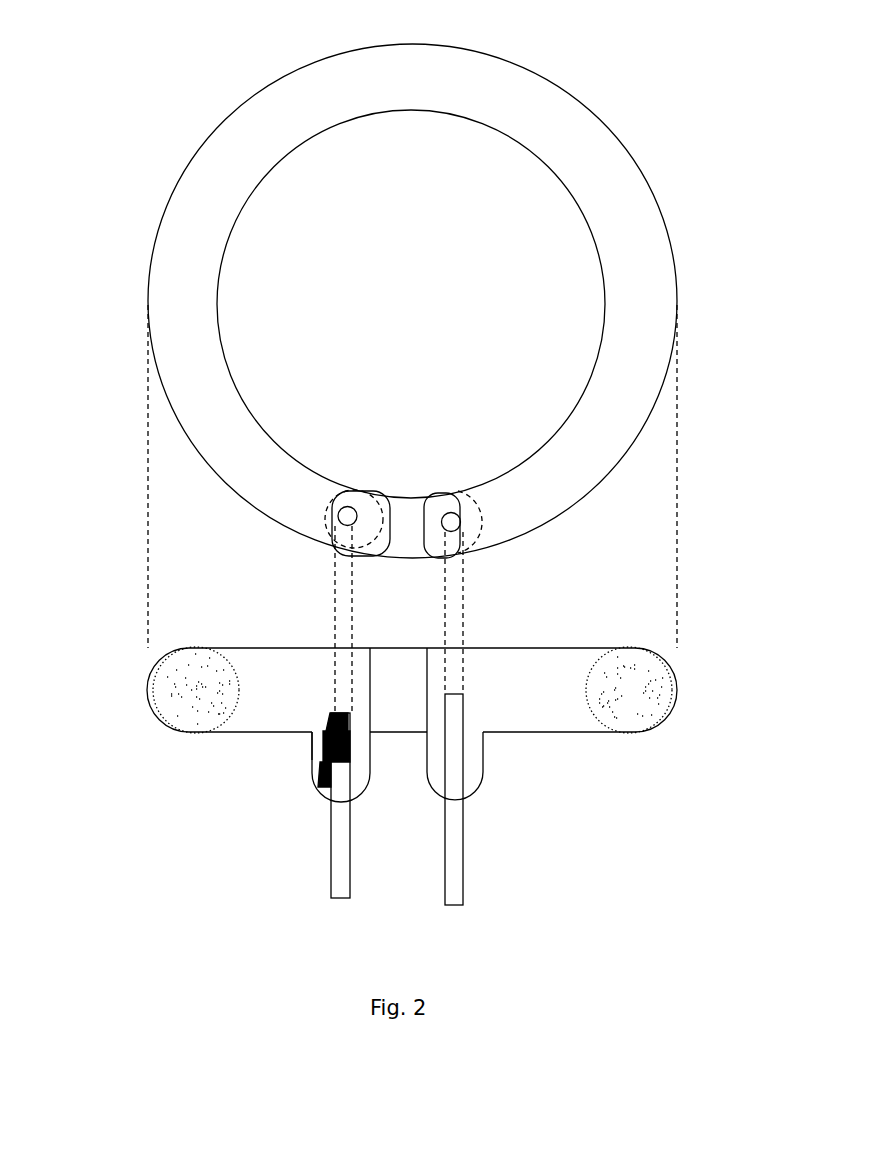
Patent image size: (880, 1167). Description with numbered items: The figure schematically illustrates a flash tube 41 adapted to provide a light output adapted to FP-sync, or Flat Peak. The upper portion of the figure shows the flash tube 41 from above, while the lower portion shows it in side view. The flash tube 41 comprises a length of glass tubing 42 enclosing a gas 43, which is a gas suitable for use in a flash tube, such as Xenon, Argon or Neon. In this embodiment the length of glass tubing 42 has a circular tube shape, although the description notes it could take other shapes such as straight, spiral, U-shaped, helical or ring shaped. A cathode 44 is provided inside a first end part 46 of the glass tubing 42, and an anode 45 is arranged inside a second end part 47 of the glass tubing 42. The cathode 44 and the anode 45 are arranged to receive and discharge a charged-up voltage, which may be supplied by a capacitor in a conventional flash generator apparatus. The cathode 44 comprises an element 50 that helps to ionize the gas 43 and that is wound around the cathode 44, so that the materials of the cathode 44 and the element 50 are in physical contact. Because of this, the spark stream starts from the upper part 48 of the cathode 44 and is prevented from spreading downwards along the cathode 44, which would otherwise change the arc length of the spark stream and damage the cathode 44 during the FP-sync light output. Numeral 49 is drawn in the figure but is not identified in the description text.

The flash tube 41 is at (172, 66).
The length of glass tubing 42 is at (650, 173).
The gas 43 is at (152, 692).
The cathode 44 is at (353, 498).
The anode 45 is at (450, 497).
The first end part 46 is at (379, 811).
The second end part 47 is at (498, 782).
The upper part 48 is at (314, 736).
The slot 49 is at (306, 718).
The element that helps to ionize the gas 50 is at (314, 776).